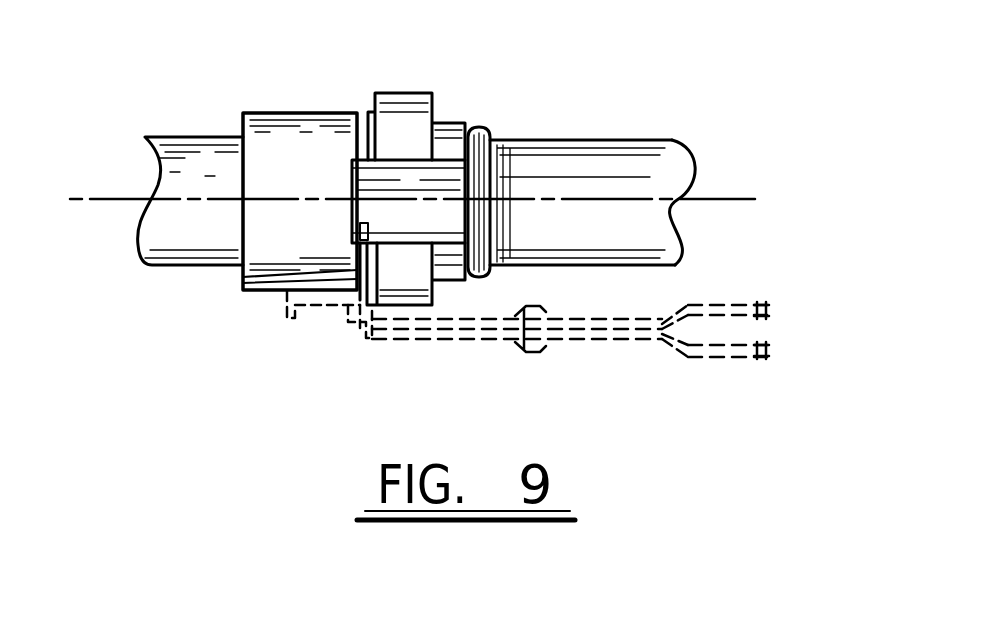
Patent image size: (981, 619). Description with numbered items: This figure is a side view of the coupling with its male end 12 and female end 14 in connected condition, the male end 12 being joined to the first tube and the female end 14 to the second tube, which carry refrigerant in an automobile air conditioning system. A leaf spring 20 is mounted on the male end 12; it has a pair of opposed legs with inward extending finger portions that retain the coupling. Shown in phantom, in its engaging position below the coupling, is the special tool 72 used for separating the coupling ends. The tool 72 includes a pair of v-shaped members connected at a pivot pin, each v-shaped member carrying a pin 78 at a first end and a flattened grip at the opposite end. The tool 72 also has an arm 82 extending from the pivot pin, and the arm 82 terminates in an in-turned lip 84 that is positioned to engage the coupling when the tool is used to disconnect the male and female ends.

The male end 12 is at (600, 137).
The female end 14 is at (320, 113).
The leaf spring 20 is at (382, 182).
The special tool 72 is at (636, 338).
The pin 78 is at (240, 277).
The arm 82 is at (310, 318).
The in-turned lip 84 is at (282, 307).